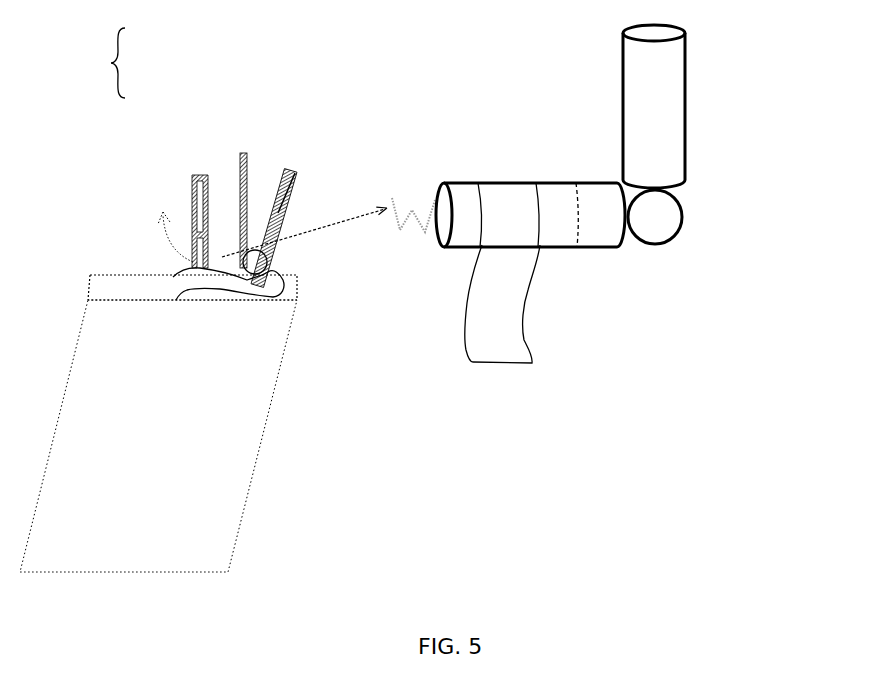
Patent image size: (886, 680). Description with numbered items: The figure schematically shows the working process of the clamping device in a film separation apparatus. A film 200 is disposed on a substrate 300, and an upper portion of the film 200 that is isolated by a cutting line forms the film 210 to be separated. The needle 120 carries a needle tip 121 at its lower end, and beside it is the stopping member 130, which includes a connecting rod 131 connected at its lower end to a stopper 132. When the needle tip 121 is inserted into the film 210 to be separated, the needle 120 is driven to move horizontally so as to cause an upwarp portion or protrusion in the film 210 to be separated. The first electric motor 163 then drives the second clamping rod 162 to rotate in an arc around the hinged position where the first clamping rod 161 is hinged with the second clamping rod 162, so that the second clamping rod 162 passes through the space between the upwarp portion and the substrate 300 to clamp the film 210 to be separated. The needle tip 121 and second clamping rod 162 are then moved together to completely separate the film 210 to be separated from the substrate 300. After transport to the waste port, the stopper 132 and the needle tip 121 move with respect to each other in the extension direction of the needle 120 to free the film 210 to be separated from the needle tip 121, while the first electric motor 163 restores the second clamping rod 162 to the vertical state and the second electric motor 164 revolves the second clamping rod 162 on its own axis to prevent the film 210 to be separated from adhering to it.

The needle 120 is at (263, 252).
The needle tip 121 is at (270, 250).
The stopping member 130 is at (91, 63).
The connecting rod 131 is at (243, 157).
The stopper 132 is at (243, 268).
The first clamping rod 161 is at (653, 87).
The second clamping rod 162 is at (550, 233).
The first electric motor 163 is at (658, 220).
The second electric motor 164 is at (592, 235).
The film 200 is at (217, 443).
The film to be separated 210 is at (175, 287).
The substrate 300 is at (223, 470).